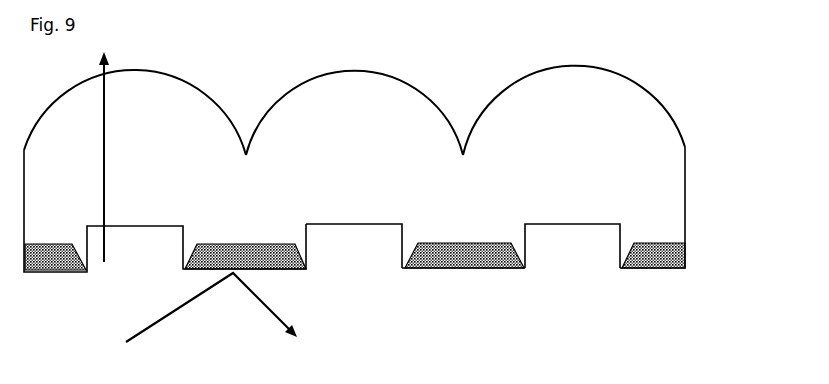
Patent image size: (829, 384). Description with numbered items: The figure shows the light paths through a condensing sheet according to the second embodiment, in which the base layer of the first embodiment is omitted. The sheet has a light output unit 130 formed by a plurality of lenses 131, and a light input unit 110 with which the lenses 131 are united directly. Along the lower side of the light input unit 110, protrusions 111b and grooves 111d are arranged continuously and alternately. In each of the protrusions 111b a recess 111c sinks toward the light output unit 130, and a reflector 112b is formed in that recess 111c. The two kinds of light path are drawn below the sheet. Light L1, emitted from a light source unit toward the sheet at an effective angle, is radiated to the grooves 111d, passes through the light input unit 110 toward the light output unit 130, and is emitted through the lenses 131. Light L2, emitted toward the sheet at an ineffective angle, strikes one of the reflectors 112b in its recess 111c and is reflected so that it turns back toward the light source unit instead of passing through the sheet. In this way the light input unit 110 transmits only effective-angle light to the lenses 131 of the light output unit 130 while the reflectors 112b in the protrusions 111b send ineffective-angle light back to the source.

The light output unit 130 is at (402, 101).
The lenses 131 is at (382, 70).
The light input unit 110 is at (406, 250).
The protrusions 111b is at (525, 239).
The recess 111c is at (662, 238).
The grooves 111d is at (393, 226).
The reflector 112b is at (458, 272).
The light incident at an effective angle L1 is at (109, 257).
The light incident at an ineffective angle L2 is at (268, 315).